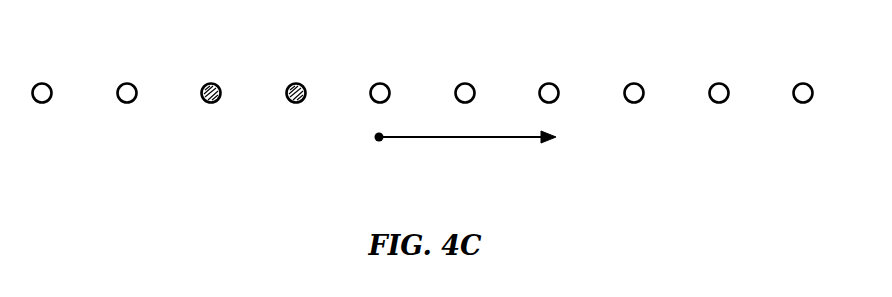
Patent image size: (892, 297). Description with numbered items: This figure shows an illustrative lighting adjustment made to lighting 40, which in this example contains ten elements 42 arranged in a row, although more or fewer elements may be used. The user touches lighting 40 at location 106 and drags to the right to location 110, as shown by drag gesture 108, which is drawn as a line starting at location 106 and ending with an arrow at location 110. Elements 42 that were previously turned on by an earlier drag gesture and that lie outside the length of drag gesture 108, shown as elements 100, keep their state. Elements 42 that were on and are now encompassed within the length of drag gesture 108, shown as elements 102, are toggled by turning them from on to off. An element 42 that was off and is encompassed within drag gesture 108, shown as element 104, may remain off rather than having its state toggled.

The lighting 40 is at (148, 163).
The element 42 is at (719, 83).
The elements 100 is at (191, 51).
The elements 102 is at (362, 51).
The element 104 is at (521, 51).
The location 106 is at (380, 142).
The drag gesture 108 is at (463, 140).
The location 110 is at (551, 152).